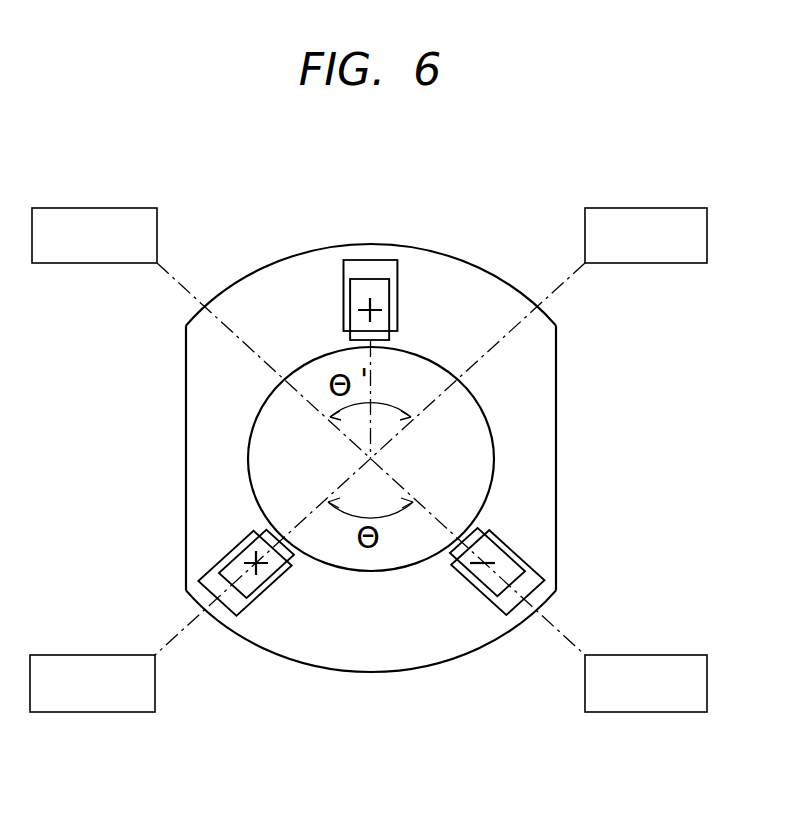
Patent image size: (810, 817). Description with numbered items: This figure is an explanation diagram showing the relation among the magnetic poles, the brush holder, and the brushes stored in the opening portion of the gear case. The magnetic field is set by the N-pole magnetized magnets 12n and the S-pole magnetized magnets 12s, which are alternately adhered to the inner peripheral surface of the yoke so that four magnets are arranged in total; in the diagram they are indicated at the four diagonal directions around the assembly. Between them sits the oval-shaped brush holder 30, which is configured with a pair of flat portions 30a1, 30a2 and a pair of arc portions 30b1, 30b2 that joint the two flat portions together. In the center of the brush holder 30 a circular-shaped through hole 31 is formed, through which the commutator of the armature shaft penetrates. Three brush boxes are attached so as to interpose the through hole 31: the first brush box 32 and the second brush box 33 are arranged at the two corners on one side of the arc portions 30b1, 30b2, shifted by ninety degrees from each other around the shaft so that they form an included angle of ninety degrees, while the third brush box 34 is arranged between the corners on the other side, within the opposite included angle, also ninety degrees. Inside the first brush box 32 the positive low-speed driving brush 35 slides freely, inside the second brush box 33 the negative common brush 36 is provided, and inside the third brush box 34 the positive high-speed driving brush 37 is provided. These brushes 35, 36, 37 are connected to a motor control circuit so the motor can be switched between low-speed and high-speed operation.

The S-pole magnetized magnet 12s is at (78, 207).
The N-pole magnetized magnet 12n is at (655, 207).
The brush holder 30 is at (379, 488).
The flat portion 30a1 is at (186, 402).
The flat portion 30a2 is at (556, 447).
The arc portion 30b1 is at (375, 672).
The arc portion 30b2 is at (235, 286).
The through hole 31 is at (492, 437).
The first brush box 32 is at (207, 576).
The second brush box 33 is at (496, 612).
The third brush box 34 is at (343, 271).
The low-speed driving brush 35 is at (258, 588).
The common brush 36 is at (522, 583).
The high-speed driving brush 37 is at (380, 279).